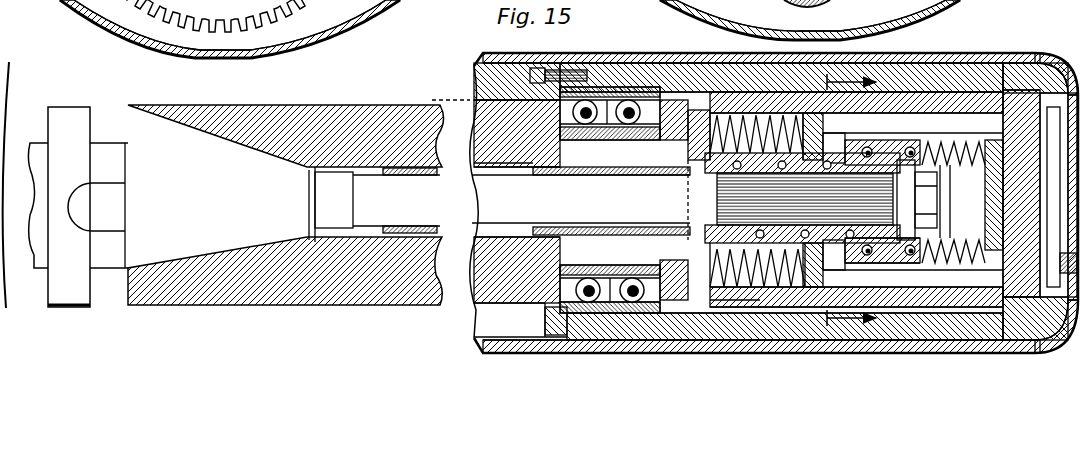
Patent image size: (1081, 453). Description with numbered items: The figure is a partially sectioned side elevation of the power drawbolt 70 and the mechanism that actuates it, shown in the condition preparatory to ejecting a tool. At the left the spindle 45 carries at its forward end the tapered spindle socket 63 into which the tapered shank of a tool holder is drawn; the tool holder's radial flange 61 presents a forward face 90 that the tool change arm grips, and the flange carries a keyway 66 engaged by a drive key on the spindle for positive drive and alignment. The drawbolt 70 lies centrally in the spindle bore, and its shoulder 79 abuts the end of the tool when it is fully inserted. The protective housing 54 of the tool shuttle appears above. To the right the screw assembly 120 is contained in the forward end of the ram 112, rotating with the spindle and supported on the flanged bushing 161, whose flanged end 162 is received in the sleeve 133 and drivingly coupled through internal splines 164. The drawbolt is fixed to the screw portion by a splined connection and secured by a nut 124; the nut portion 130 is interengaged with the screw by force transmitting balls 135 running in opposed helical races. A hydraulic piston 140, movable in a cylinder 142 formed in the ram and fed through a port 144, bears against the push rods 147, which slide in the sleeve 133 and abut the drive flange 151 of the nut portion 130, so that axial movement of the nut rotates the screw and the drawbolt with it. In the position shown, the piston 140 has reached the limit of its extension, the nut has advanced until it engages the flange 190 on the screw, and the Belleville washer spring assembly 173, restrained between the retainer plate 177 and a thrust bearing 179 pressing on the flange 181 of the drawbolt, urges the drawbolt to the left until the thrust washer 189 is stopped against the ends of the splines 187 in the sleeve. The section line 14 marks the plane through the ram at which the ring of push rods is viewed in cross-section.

The section line 14- 14 is at (867, 202).
The spindle 45 is at (449, 88).
The protective housing 54 is at (655, 58).
The radial flange 61 is at (78, 112).
The tapered spindle socket 63 is at (215, 158).
The keyway 66 is at (115, 183).
The drawbolt 70 is at (462, 228).
The shoulder 79 is at (347, 202).
The forward face 90 is at (48, 110).
The ram 112 is at (978, 65).
The screw assembly 120 is at (770, 110).
The nut 124 is at (934, 204).
The nut portion 130 is at (828, 142).
The sleeve 133 is at (727, 98).
The force transmitting balls 135 is at (688, 178).
The piston 140 is at (1018, 92).
The cylinder 142 is at (1040, 300).
The port 144 is at (1062, 93).
The push rods 147 is at (952, 118).
The drive flange 151 is at (732, 290).
The flanged bushing 161 is at (575, 141).
The flanged end 162 is at (665, 264).
The internal splines 164 is at (700, 92).
The Belleville washer spring assembly 173 is at (990, 157).
The retainer plate 177 is at (1000, 175).
The thrust bearing 179 is at (918, 146).
The flange 181 is at (890, 247).
The splines 187 is at (855, 248).
The thrust washer 189 is at (870, 147).
The flange 190 is at (700, 225).